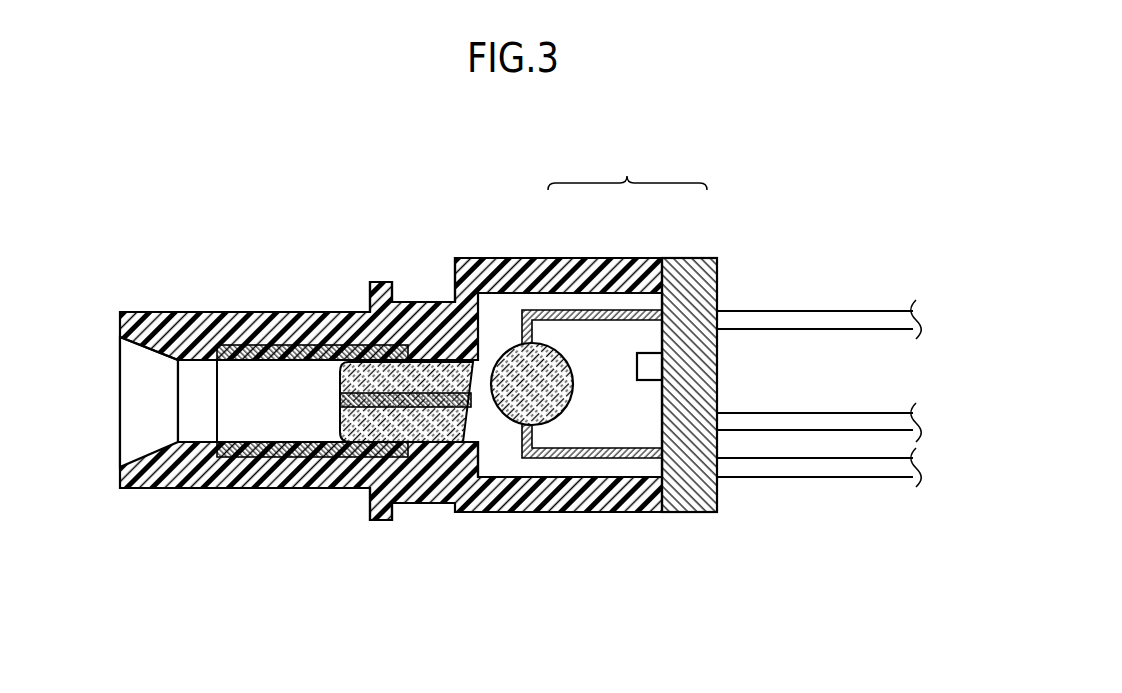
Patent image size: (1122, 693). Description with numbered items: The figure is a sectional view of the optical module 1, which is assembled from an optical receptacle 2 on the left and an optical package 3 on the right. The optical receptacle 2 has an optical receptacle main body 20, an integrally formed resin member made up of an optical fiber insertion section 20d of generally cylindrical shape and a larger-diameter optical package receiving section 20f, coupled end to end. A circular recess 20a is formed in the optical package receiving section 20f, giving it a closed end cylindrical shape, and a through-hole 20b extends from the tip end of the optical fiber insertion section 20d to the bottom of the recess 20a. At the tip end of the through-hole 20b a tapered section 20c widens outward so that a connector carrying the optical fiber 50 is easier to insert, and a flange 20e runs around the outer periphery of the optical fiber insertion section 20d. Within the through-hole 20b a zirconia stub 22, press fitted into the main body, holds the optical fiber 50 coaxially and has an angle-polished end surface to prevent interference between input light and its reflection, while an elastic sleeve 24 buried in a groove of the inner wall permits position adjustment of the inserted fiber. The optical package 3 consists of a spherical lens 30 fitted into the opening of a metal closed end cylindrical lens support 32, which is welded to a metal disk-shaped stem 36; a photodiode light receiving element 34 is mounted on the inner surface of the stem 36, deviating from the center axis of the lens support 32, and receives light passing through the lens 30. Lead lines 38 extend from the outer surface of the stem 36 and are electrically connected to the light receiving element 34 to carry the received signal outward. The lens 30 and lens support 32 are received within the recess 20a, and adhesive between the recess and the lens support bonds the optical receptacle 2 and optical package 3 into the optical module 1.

The optical module 1 is at (717, 627).
The optical receptacle 2 is at (265, 535).
The optical package 3 is at (627, 166).
The optical receptacle main body 20 is at (283, 310).
The recess 20a is at (522, 472).
The through-hole 20b is at (293, 396).
The tapered section 20c is at (128, 402).
The optical fiber insertion section 20d is at (140, 316).
The flange 20e is at (379, 520).
The optical package receiving section 20f is at (483, 258).
The stub 22 is at (421, 372).
The sleeve 24 is at (227, 440).
The optical fiber 50 is at (339, 402).
The lens 30 is at (547, 343).
The lens support 32 is at (600, 310).
The light receiving element 34 is at (648, 353).
The stem 36 is at (684, 258).
The lead line 38 is at (837, 507).